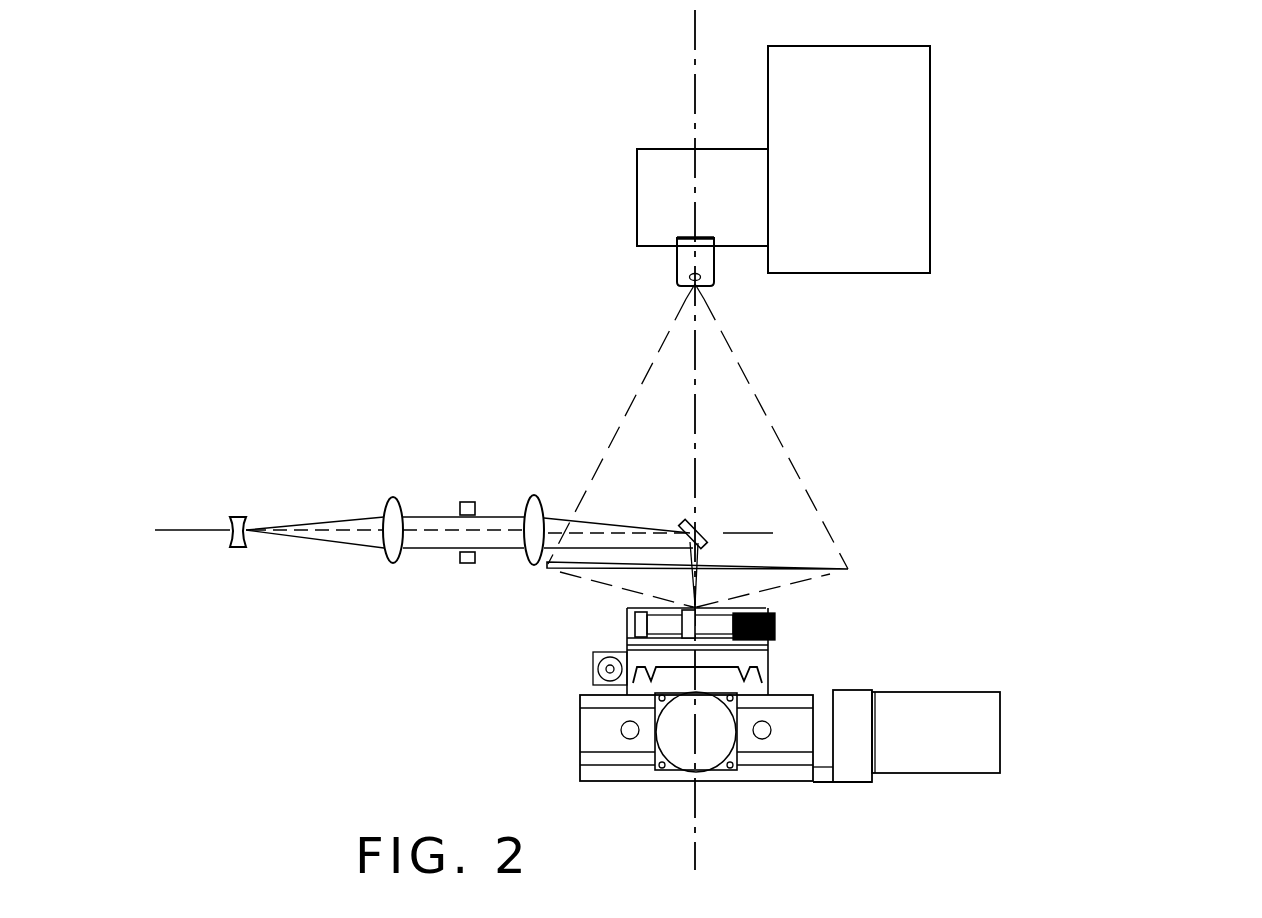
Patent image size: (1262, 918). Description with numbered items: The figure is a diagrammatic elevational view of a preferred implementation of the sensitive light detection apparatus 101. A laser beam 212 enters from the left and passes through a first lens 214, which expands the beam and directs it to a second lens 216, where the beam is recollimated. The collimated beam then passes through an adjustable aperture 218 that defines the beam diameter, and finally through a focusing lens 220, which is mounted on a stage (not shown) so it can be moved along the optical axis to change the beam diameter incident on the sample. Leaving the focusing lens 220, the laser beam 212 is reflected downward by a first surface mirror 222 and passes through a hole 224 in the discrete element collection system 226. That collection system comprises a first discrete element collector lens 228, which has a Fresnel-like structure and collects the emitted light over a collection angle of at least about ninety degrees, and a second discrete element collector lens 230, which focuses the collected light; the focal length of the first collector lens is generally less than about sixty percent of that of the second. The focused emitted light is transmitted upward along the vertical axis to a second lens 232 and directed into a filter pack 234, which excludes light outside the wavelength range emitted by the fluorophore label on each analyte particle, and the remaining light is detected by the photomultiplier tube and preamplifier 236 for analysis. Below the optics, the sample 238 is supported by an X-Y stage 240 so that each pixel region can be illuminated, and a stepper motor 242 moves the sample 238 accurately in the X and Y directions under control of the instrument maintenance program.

The sensitive light detection apparatus 101 is at (1075, 180).
The laser beam 212 is at (182, 528).
The first lens 214 is at (246, 528).
The second lens 216 is at (388, 503).
The adjustable aperture 218 is at (465, 502).
The focusing lens 220 is at (542, 498).
The first surface mirror 222 is at (700, 526).
The hole 224 is at (700, 561).
The discrete element collection system 226 is at (850, 570).
The first discrete element collector lens 228 is at (822, 574).
The second discrete element collector lens 230 is at (803, 563).
The second lens 232 is at (708, 284).
The filter pack 234 is at (677, 252).
The photomultiplier tube and preamplifier 236 is at (637, 187).
The sample 238 is at (697, 605).
The X-Y stage 240 is at (762, 666).
The stepper motor 242 is at (933, 705).